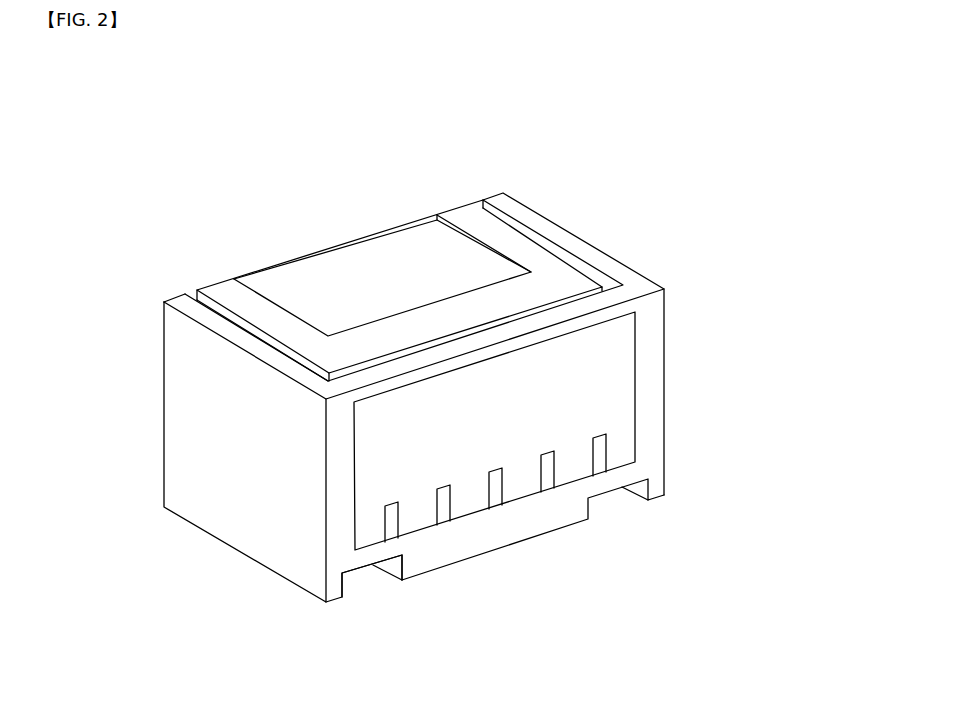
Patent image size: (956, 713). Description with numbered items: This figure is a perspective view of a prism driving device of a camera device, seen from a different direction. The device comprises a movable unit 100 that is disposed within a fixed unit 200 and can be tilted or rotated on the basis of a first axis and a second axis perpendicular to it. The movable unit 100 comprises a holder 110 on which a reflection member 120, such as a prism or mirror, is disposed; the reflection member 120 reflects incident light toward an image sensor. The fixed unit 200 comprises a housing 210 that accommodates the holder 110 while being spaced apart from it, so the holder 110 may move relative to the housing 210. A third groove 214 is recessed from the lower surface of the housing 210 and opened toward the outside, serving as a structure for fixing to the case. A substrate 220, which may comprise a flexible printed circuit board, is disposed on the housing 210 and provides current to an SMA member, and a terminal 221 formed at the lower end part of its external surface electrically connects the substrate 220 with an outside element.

The movable unit 100 is at (422, 248).
The holder 110 is at (547, 267).
The reflection member 120 is at (425, 267).
The fixed unit 200 is at (497, 435).
The housing 210 is at (462, 435).
The third groove 214 is at (370, 567).
The substrate 220 is at (557, 443).
The terminal 221 is at (600, 458).